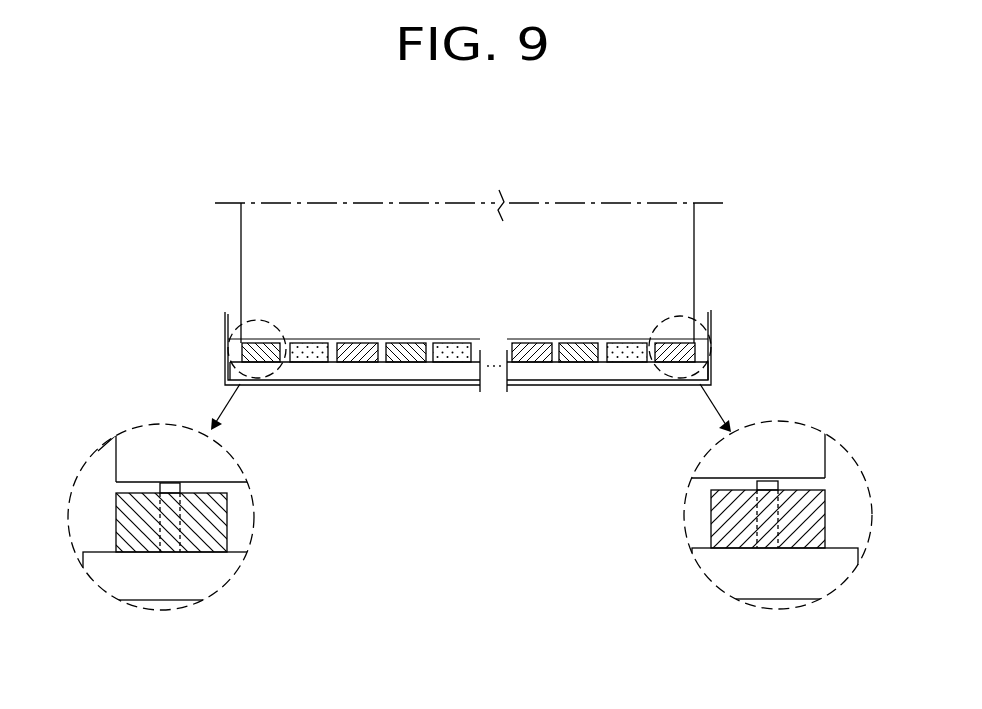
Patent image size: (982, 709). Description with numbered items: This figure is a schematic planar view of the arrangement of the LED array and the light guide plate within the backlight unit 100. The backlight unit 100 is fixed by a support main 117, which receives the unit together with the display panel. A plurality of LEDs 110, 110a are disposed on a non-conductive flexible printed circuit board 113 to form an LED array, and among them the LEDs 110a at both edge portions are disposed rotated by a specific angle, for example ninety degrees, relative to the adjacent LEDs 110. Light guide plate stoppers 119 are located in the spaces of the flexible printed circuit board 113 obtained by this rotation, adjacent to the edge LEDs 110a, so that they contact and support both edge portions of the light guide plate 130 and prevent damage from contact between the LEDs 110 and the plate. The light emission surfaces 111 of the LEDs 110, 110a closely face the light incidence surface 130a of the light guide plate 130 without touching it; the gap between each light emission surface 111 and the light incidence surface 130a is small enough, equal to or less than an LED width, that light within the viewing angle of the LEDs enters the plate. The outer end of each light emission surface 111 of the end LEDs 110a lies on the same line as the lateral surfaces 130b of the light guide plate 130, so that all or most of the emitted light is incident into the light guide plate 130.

The backlight unit 100 is at (678, 168).
The light guide plate 130 is at (673, 246).
The light incidence surface 130a is at (223, 483).
The lateral surfaces 130b is at (241, 272).
The support main 117 is at (712, 323).
The flexible printed circuit board 113 is at (702, 371).
The light guide plate stopper 119 is at (160, 486).
The LED 110 is at (358, 363).
The edge LED 110a is at (260, 363).
The light emission surface 111 is at (193, 490).